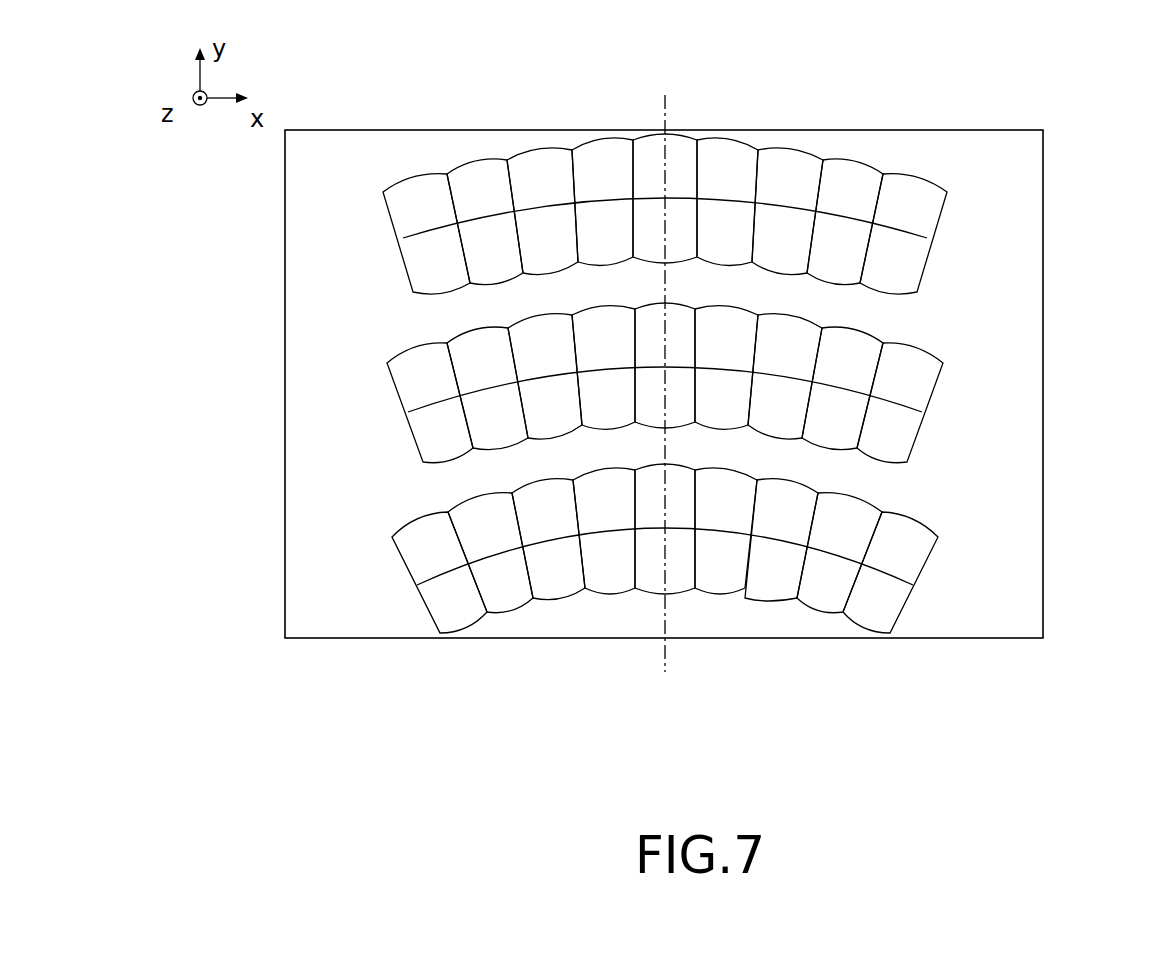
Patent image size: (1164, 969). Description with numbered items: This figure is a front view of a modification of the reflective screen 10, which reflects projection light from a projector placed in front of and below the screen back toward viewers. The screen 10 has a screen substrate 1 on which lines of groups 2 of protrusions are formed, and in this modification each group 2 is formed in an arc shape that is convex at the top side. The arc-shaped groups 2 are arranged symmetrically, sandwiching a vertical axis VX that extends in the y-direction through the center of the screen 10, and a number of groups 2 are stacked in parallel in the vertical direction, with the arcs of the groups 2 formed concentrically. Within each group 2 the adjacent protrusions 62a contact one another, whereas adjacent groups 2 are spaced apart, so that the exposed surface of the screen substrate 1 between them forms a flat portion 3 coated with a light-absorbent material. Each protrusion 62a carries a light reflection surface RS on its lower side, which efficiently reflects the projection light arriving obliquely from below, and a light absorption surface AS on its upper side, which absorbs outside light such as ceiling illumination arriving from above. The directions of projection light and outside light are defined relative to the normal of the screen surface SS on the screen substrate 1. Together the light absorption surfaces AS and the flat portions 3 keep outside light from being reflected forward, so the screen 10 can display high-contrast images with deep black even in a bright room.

The screen 10 is at (1058, 118).
The screen substrate 1 is at (1045, 165).
The group 2 is at (390, 240).
The flat portion 3 is at (902, 320).
The protrusions 62a is at (792, 162).
The light absorption surface AS is at (415, 183).
The light reflection surface RS is at (438, 280).
The screen surface SS is at (1013, 578).
The vertical axis VX is at (667, 653).